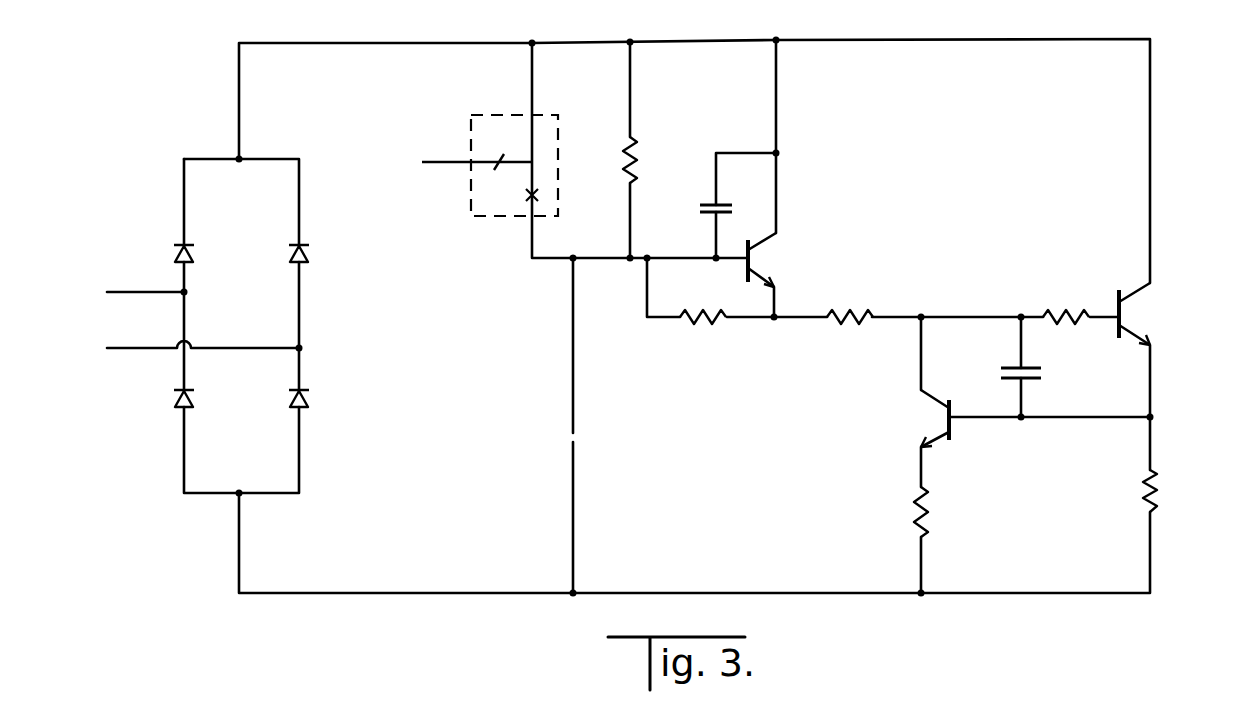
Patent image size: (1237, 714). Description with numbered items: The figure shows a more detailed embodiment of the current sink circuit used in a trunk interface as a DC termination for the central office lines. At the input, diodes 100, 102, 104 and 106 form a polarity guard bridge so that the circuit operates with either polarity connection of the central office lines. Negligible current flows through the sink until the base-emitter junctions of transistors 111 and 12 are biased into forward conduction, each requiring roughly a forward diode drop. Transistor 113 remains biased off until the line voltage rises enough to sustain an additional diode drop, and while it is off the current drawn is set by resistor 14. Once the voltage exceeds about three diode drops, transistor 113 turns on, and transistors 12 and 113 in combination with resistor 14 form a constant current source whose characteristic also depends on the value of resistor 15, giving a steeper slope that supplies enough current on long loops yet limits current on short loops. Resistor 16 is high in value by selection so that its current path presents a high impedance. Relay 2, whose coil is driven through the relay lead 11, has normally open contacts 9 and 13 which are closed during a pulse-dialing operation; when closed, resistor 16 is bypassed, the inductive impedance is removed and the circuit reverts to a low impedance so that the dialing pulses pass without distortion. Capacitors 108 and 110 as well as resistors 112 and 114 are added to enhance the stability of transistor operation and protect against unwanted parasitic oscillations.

The relay 2 is at (480, 151).
The relay contact 9 is at (521, 216).
The relay input lead 11 is at (477, 153).
The transistor 12 is at (1115, 289).
The relay contact 13 is at (514, 101).
The resistor 14 is at (1162, 490).
The resistor 15 is at (876, 300).
The resistor 16 is at (622, 166).
The diode 100 is at (176, 256).
The diode 102 is at (176, 403).
The diode 104 is at (290, 254).
The diode 106 is at (290, 402).
The capacitor 108 is at (705, 208).
The capacitor 110 is at (1036, 367).
The transistor 111 is at (758, 266).
The resistor 112 is at (913, 497).
The transistor 113 is at (949, 417).
The resistor 114 is at (1067, 301).